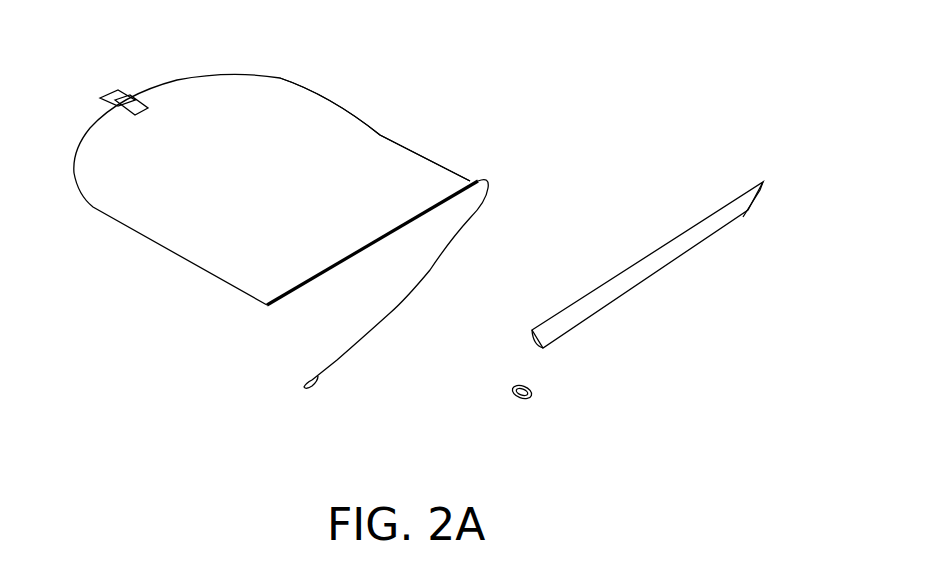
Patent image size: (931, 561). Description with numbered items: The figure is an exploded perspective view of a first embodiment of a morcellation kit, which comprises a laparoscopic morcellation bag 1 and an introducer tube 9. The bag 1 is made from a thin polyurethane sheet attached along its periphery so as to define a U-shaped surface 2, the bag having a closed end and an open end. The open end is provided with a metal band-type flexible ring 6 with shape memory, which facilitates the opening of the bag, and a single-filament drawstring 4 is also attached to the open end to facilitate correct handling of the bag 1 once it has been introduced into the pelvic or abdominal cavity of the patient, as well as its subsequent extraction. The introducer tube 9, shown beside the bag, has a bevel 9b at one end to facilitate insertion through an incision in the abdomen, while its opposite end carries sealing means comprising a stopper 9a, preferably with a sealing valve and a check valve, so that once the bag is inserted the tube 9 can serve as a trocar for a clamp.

The bag 1 is at (152, 253).
The U-shaped surface 2 is at (325, 122).
The drawstring 4 is at (382, 345).
The flexible ring 6 is at (293, 297).
The introducer tube 9 is at (643, 270).
The stopper 9a is at (533, 400).
The bevel 9b is at (760, 200).